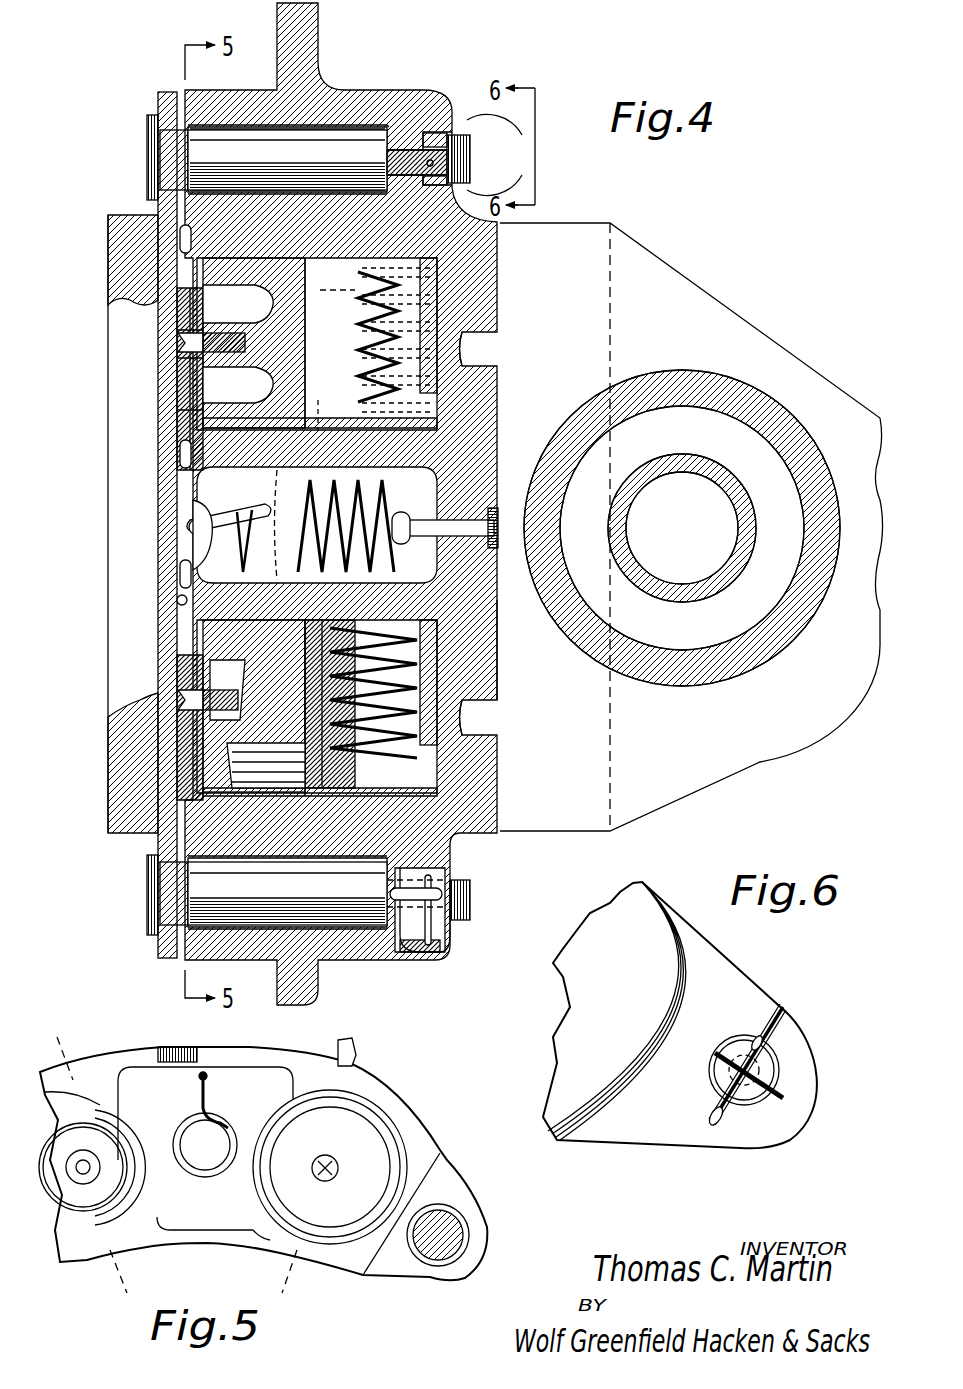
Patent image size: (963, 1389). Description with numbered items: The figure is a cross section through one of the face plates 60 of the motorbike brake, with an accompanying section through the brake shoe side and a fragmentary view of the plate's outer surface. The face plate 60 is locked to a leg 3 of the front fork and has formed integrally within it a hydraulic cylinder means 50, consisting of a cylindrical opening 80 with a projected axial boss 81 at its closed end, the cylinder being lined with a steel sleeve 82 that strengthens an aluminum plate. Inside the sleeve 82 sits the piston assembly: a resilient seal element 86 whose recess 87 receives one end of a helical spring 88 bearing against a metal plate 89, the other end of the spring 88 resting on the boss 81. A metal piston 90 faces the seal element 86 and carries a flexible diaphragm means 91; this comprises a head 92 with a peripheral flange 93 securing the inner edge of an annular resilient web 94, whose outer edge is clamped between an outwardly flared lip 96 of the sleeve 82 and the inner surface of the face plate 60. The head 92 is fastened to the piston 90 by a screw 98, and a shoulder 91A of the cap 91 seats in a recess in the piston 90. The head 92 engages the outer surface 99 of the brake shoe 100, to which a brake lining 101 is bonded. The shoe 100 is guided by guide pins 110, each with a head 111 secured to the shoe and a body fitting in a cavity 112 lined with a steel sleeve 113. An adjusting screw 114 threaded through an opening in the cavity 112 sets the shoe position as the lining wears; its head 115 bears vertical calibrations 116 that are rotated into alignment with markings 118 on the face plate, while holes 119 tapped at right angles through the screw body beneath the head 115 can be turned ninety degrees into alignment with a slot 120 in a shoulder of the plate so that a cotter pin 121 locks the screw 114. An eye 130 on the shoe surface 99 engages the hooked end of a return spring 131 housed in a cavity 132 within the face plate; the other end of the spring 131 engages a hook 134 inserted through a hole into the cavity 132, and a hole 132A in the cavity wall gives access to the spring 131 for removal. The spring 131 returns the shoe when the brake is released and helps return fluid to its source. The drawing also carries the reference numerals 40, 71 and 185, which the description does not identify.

In FIG. 4, the leg 3 is at (700, 382).
In FIG. 4, the disc brake caliper assembly 40 is at (100, 565).
In FIG. 4, the hydraulic cylinder means 50 is at (450, 283).
In FIG. 4, the face plate 60 is at (320, 62).
In FIG. 4, the housing bridge portion 71 is at (467, 710).
In FIG. 4, the cylindrical opening 80 is at (366, 345).
In FIG. 4, the axial boss 81 is at (468, 352).
In FIG. 4, the steel sleeve 82 is at (318, 272).
In FIG. 4, the seal element 86 is at (425, 424).
In FIG. 4, the recess 87 is at (437, 648).
In FIG. 4, the helical spring 88 is at (402, 675).
In FIG. 4, the metal plate 89 is at (312, 706).
In FIG. 4, the metal piston 90 is at (265, 415).
In FIG. 4, the diaphragm means 91 is at (176, 377).
In FIG. 5, the diaphragm means 91 is at (300, 1134).
In FIG. 4, the shoulder 91A is at (238, 304).
In FIG. 4, the head 92 is at (180, 395).
In FIG. 4, the peripheral flange 93 is at (185, 418).
In FIG. 4, the flexible resilient web 94 is at (185, 462).
In FIG. 5, the flexible resilient web 94 is at (330, 1238).
In FIG. 4, the outwardly flared lip 96 is at (183, 252).
In FIG. 4, the screw 98 is at (186, 340).
In FIG. 5, the screw 98 is at (345, 1158).
In FIG. 4, the outer surface 99 is at (180, 566).
In FIG. 4, the brake shoe 100 is at (170, 686).
In FIG. 4, the brake lining 101 is at (130, 782).
In FIG. 4, the guide pin 110 is at (270, 143).
In FIG. 5, the guide pin 110 is at (440, 1232).
In FIG. 4, the head 111 is at (148, 150).
In FIG. 4, the cavity 112 is at (383, 110).
In FIG. 4, the steel sleeve 113 is at (332, 115).
In FIG. 5, the steel sleeve 113 is at (432, 1262).
In FIG. 4, the adjusting screw 114 is at (480, 106).
In FIG. 4, the head 115 is at (490, 127).
In FIG. 4, the vertical calibrations 116 is at (485, 192).
In FIG. 6, the markings 118 is at (713, 1052).
In FIG. 4, the holes 119 is at (428, 160).
In FIG. 4, the slot 120 is at (428, 908).
In FIG. 6, the slot 120 is at (784, 1007).
In FIG. 4, the cotter pin 121 is at (446, 925).
In FIG. 6, the cotter pin 121 is at (767, 1040).
In FIG. 4, the eye 130 is at (200, 528).
In FIG. 4, the spring 131 is at (247, 528).
In FIG. 5, the spring 131 is at (218, 1177).
In FIG. 4, the cavity 132 is at (427, 489).
In FIG. 4, the hole 132A is at (218, 562).
In FIG. 5, the hole 132A is at (193, 1043).
In FIG. 4, the hook 134 is at (415, 530).
In FIG. 4, the fluid passage 185 is at (318, 402).